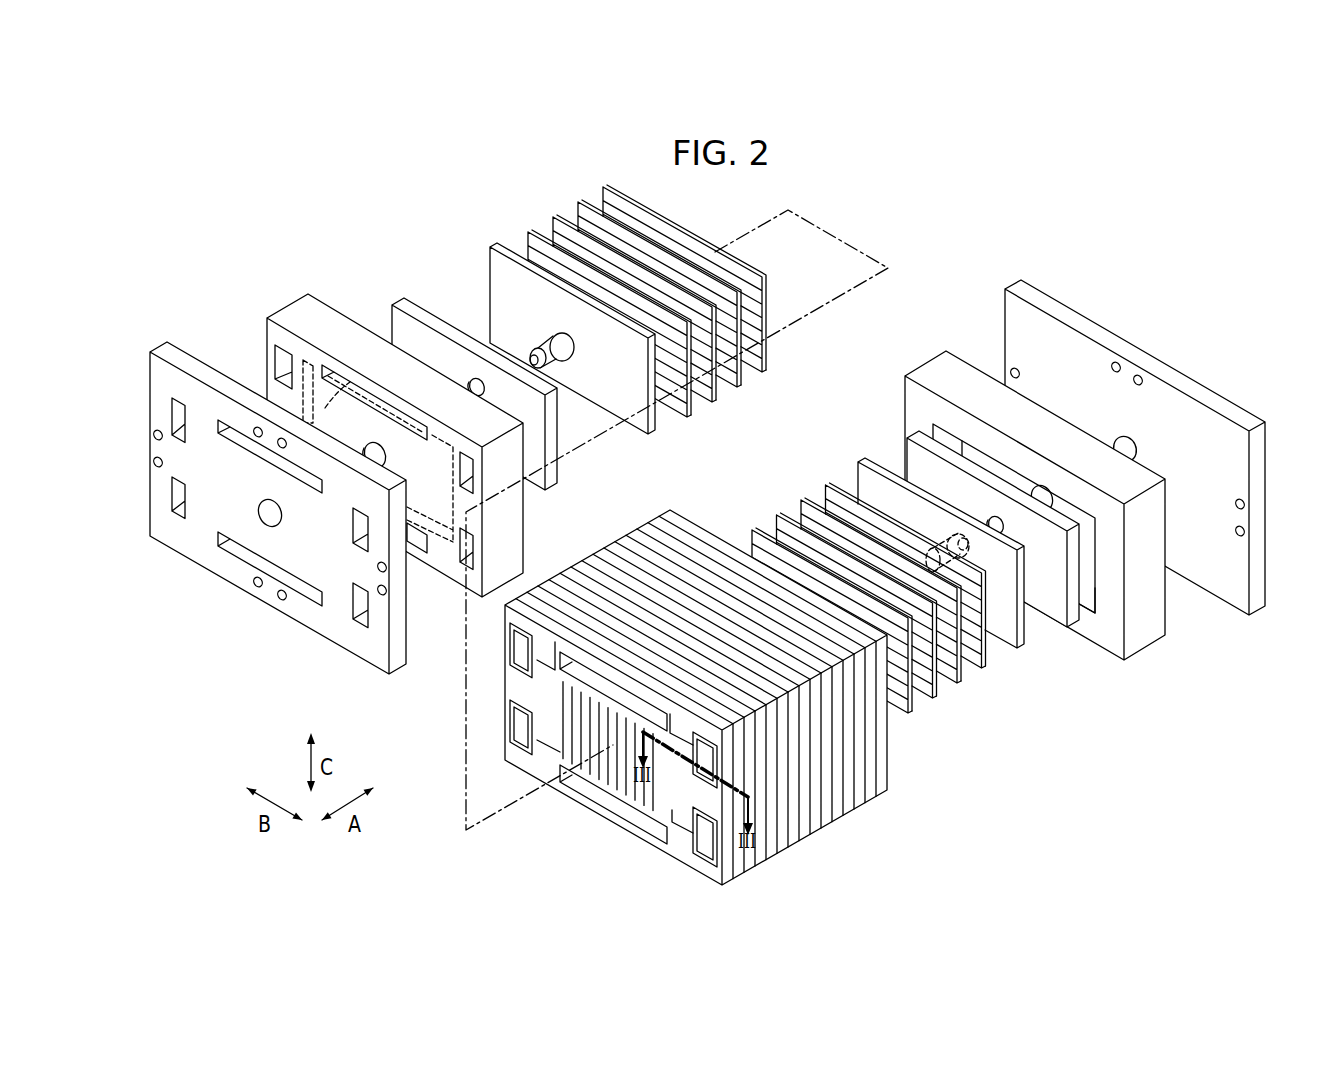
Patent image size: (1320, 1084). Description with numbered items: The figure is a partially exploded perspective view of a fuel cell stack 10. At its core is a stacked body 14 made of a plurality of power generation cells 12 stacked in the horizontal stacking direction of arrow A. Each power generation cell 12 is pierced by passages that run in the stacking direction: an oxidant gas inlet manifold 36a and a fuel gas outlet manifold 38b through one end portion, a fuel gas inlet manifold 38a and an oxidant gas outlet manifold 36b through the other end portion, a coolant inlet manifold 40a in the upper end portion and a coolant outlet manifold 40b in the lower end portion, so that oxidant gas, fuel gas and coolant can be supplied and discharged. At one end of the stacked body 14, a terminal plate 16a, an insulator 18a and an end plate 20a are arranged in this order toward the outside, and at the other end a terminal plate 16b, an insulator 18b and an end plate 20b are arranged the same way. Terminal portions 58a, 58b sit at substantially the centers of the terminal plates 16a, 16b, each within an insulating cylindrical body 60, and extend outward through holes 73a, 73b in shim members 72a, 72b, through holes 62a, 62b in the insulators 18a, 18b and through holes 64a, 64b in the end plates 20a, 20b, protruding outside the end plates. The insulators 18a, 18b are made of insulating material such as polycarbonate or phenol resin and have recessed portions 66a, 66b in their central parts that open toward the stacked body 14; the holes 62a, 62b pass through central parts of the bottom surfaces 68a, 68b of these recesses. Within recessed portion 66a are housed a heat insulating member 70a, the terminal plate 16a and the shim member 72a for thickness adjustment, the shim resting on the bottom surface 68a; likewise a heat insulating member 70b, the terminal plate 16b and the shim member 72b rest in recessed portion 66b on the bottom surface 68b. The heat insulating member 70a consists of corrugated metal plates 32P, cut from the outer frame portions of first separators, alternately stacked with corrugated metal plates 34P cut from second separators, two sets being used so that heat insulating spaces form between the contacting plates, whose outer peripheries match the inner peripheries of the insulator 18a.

The fuel cell stack 10 is at (823, 187).
The power generation cell 12 is at (842, 815).
The stacked body 14 is at (905, 811).
The terminal plate 16a is at (494, 273).
The terminal plate 16b is at (868, 482).
The insulator 18a is at (318, 295).
The insulator 18b is at (1140, 654).
The end plate 20a is at (182, 348).
The end plate 20b is at (1056, 296).
The corrugated metal plate 32P is at (760, 367).
The corrugated metal plate 34P is at (737, 390).
The oxidant gas inlet manifold 36a is at (183, 422).
The oxidant gas outlet manifold 36b is at (353, 605).
The fuel gas inlet manifold 38a is at (362, 533).
The fuel gas outlet manifold 38b is at (190, 500).
The coolant inlet manifold 40a is at (257, 452).
The coolant outlet manifold 40b is at (243, 557).
The terminal portion 58a is at (543, 341).
The terminal portion 58b is at (967, 528).
The insulating cylindrical body 60 is at (563, 352).
The hole 62a is at (380, 452).
The hole 62b is at (1045, 496).
The hole 64a is at (263, 513).
The hole 64b is at (1137, 449).
The recessed portion 66a is at (420, 517).
The recessed portion 66b is at (1104, 594).
The bottom surface 68a is at (360, 380).
The bottom surface 68b is at (1009, 478).
The heat insulating member 70a is at (540, 220).
The heat insulating member 70b is at (757, 509).
The shim member 72a is at (415, 303).
The shim member 72b is at (1055, 609).
The hole 73a is at (487, 390).
The hole 73b is at (1005, 530).